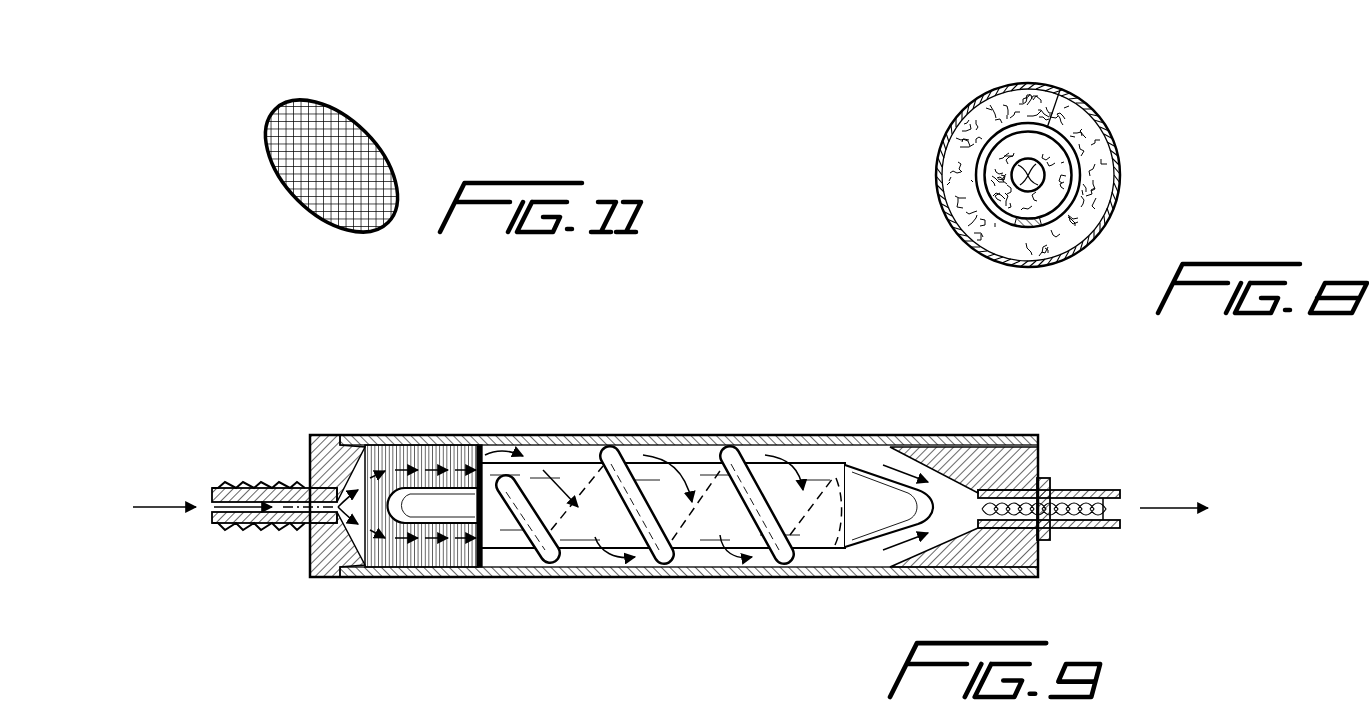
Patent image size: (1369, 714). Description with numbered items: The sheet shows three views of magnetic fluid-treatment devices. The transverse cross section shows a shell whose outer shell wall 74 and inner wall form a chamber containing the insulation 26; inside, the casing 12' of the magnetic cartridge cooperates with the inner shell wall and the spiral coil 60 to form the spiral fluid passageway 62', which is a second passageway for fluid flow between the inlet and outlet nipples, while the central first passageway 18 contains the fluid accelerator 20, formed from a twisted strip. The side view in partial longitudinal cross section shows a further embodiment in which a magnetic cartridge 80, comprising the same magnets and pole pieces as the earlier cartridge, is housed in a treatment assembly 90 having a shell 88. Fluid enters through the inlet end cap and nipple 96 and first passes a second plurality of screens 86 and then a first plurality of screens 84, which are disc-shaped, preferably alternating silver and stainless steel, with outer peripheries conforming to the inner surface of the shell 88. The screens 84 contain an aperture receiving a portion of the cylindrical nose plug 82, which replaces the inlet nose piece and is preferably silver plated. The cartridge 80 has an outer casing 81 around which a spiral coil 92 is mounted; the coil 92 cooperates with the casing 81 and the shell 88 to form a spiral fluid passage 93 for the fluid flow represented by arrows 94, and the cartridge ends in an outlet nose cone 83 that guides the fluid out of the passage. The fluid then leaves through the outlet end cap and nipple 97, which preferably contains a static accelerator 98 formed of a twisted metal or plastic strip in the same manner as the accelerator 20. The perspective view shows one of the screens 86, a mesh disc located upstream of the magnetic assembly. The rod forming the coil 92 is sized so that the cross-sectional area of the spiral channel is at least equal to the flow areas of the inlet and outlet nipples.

In FIG. 8, the casing 12' is at (1083, 179).
In FIG. 8, the first passageway 18 is at (1035, 173).
In FIG. 8, the fluid accelerator 20 is at (1057, 178).
In FIG. 8, the insulation 26 is at (977, 113).
In FIG. 8, the spiral coil 60 is at (1043, 237).
In FIG. 8, the spiral fluid passageway 62' is at (971, 178).
In FIG. 8, the outer shell wall 74 is at (937, 148).
In FIG. 9, the magnetic cartridge 80 is at (828, 555).
In FIG. 9, the outer casing 81 is at (500, 552).
In FIG. 9, the cylindrical nose plug 82 is at (418, 516).
In FIG. 9, the outlet nose cone 83 is at (853, 450).
In FIG. 9, the first plurality of screens 84 is at (490, 456).
In FIG. 11, the second plurality of screens 86 is at (385, 160).
In FIG. 9, the second plurality of screens 86 is at (343, 462).
In FIG. 9, the shell 88 is at (598, 448).
In FIG. 9, the treatment assembly 90 is at (676, 425).
In FIG. 9, the spiral coil 92 is at (755, 450).
In FIG. 9, the spiral fluid passage 93 is at (598, 555).
In FIG. 9, the arrows 94 is at (724, 553).
In FIG. 9, the inlet end cap and nipple 96 is at (252, 482).
In FIG. 9, the outlet end cap and nipple 97 is at (1068, 530).
In FIG. 9, the static accelerator 98 is at (1097, 530).